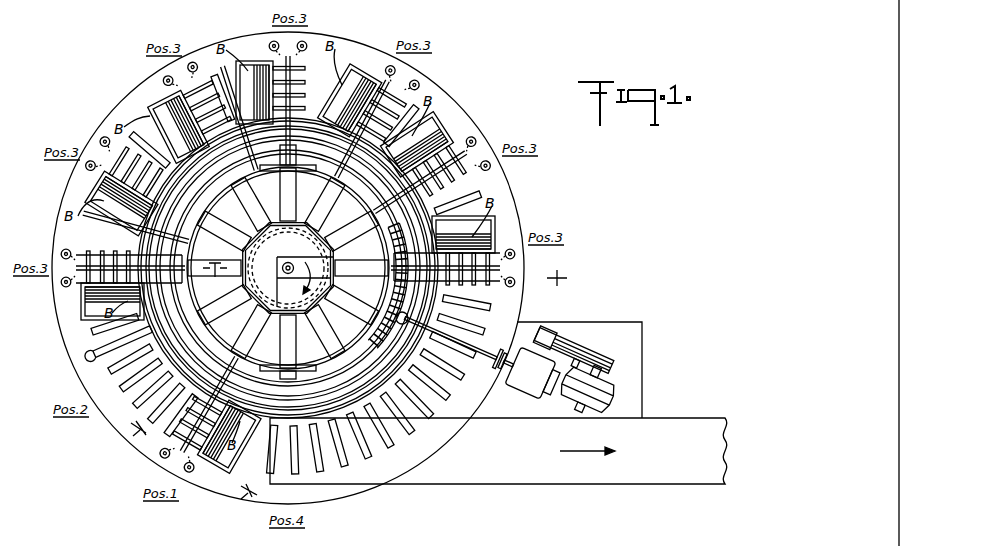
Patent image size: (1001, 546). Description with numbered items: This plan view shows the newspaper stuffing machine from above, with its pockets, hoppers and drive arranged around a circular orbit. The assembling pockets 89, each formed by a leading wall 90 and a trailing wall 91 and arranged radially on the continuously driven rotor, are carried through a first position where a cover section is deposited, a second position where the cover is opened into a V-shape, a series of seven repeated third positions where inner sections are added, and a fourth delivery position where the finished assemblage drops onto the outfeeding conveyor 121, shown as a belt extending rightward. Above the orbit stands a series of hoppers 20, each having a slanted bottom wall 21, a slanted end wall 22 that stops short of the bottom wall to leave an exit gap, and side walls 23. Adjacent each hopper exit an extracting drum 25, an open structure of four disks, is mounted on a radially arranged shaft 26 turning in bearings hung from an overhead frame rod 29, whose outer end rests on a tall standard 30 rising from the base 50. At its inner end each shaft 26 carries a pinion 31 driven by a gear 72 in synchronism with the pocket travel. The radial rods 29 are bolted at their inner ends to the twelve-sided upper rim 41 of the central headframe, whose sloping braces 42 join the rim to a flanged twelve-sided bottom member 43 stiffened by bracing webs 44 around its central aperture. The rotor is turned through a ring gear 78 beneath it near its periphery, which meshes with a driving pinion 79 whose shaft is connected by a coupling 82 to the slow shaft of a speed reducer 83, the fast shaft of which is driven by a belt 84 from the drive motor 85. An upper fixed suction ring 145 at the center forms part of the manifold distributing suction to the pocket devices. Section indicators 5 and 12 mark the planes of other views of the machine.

The section line 5 is at (385, 261).
The section marker 12 is at (183, 469).
The hopper 20 is at (152, 105).
The bottom wall 21 is at (340, 57).
The end wall 22 is at (395, 73).
The side walls 23 is at (370, 61).
The extracting drum 25 is at (80, 252).
The shaft 26 is at (78, 297).
The overhead frame rod 29 is at (110, 140).
The tall standard 30 is at (61, 253).
The pinion 31 is at (299, 209).
The upper rim 41 is at (250, 307).
The side pieces or braces 42 is at (354, 263).
The bottom member 43 is at (276, 321).
The bracing webs 44 is at (282, 269).
The base 50 is at (470, 118).
The gear 72 is at (382, 306).
The ring gear 78 is at (408, 303).
The driving pinion 79 is at (408, 322).
The coupling 82 is at (512, 382).
The speed reducer 83 is at (534, 381).
The belt 84 is at (578, 356).
The drive motor 85 is at (606, 393).
The assembling pockets 89 is at (228, 70).
The leading wall 90 is at (76, 354).
The trailing wall 91 is at (82, 361).
The outfeeding conveyor 121 is at (548, 484).
The upper fixed suction ring 145 is at (276, 171).